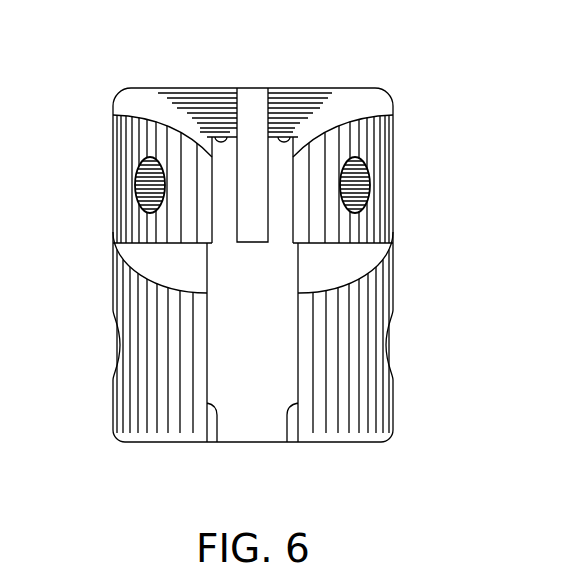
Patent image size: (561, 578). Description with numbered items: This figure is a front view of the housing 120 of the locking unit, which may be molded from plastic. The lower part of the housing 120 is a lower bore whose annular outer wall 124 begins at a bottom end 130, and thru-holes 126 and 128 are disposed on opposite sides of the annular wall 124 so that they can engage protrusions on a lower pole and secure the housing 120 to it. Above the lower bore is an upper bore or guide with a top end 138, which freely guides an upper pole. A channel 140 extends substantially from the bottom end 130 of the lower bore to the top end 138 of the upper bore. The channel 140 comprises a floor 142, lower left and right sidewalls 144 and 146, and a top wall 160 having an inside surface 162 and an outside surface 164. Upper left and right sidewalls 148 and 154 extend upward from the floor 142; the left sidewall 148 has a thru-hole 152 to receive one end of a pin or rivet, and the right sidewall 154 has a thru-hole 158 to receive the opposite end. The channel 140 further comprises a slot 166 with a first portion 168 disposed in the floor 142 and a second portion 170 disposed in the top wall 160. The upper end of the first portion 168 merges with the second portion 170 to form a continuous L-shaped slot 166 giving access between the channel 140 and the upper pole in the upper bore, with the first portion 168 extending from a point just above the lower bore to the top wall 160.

The housing 120 is at (450, 435).
The annular outer wall 124 is at (117, 403).
The thru-hole 126 is at (120, 345).
The thru-hole 128 is at (387, 345).
The bottom end 130 is at (157, 443).
The top end 138 is at (352, 88).
The channel 140 is at (266, 341).
The floor 142 is at (247, 332).
The lower left sidewall 144 is at (217, 442).
The lower right sidewall 146 is at (287, 442).
The upper left sidewall 148 is at (207, 232).
The thru-hole 152 is at (150, 186).
The upper right sidewall 154 is at (298, 232).
The thru-hole 158 is at (357, 184).
The top wall 160 is at (208, 110).
The inside surface 162 is at (207, 145).
The outside surface 164 is at (220, 88).
The slot 166 is at (252, 175).
The first portion 168 is at (239, 205).
The second portion 170 is at (239, 121).